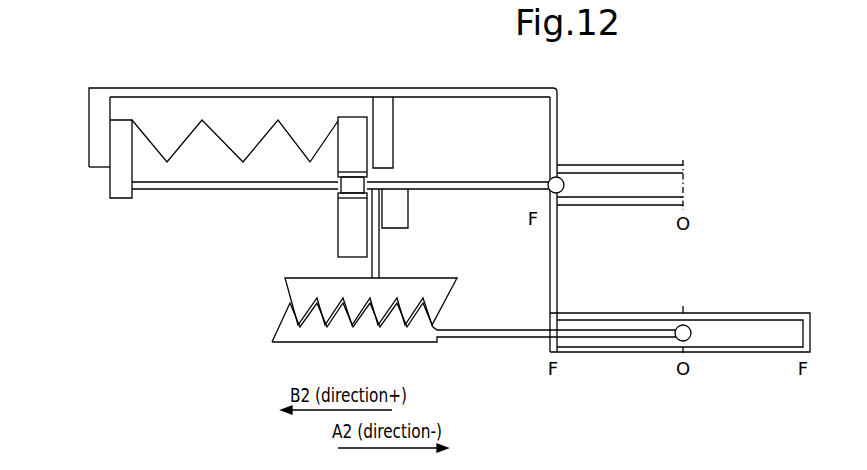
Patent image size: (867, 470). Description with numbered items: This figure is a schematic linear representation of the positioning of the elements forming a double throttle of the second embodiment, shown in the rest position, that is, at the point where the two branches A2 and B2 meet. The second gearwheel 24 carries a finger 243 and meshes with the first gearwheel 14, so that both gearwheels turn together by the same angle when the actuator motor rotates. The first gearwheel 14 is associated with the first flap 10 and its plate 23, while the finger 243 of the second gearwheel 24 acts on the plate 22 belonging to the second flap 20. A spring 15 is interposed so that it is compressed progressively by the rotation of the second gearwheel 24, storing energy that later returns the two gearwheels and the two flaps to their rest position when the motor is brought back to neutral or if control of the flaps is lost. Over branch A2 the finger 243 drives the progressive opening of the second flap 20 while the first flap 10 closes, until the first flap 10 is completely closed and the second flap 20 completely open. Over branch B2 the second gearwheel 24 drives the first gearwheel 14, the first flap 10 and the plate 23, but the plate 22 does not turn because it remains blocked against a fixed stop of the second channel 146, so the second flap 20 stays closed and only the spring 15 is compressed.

The second channel 146 is at (86, 113).
The spring 15 is at (220, 130).
The second flap 20 is at (563, 182).
The plate 22 is at (398, 205).
The plate 23 is at (350, 218).
The finger 243 is at (377, 243).
The second gearwheel 24 is at (292, 295).
The first gearwheel 14 is at (290, 328).
The first flap 10 is at (690, 333).